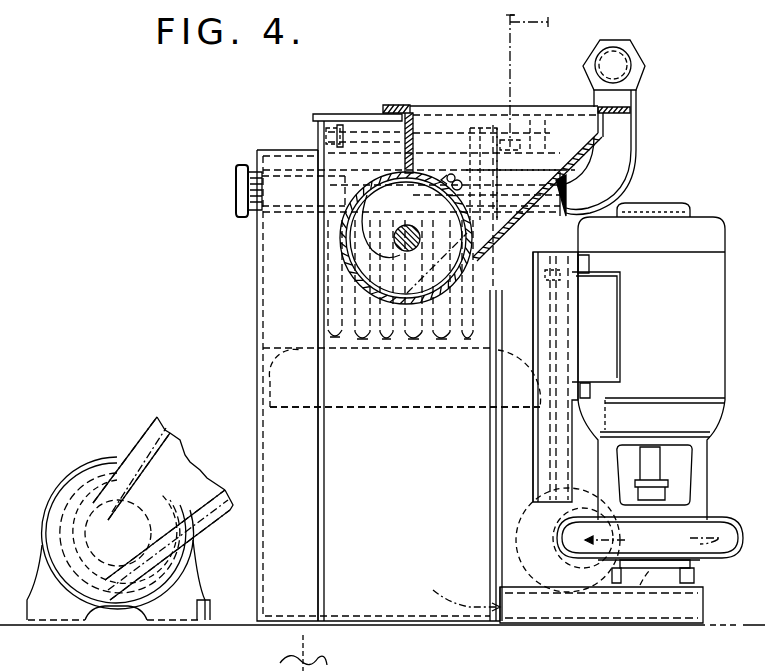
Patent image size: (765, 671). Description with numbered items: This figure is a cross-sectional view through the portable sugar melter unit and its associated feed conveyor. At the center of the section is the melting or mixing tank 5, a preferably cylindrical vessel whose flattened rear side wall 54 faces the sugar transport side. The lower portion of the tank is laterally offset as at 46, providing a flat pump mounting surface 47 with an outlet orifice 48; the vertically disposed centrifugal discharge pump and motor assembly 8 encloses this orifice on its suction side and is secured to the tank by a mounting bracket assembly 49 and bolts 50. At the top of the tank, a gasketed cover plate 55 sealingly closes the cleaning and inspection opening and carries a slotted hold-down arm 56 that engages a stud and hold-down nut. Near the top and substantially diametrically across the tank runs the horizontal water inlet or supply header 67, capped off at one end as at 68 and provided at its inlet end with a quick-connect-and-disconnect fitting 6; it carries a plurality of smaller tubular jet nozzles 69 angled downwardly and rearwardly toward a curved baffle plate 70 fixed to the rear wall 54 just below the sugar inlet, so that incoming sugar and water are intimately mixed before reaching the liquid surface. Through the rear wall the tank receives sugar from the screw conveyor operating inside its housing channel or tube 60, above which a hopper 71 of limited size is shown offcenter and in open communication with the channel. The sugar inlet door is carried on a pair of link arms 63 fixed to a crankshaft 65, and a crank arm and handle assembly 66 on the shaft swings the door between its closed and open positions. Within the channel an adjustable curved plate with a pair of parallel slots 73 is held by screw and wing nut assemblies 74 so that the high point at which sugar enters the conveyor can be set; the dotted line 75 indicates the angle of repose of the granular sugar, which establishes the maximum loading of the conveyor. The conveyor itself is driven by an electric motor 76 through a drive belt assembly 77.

The melting or mixing tank 5 is at (249, 302).
The quick-connect-and-disconnect fitting 6 is at (638, 68).
The centrifugal discharge pump and motor assembly 8 is at (651, 361).
The laterally offset lower portion 46 is at (555, 610).
The pump mounting surface 47 is at (603, 576).
The outlet orifice 48 is at (640, 590).
The mounting bracket assembly 49 is at (583, 310).
The bolts 50 is at (590, 262).
The flattened rear side wall 54 is at (328, 428).
The cover plate 55 is at (348, 113).
The slotted hold-down arm 56 is at (285, 658).
The conveyor housing channel or tube 60 is at (355, 280).
The link arms 63 is at (345, 190).
The crankshaft 65 is at (372, 135).
The crank arm and handle assembly 66 is at (512, 82).
The water inlet or supply header 67 is at (624, 186).
The capped terminating end 68 is at (235, 186).
The tubular jet nozzles 69 is at (336, 341).
The curved baffle plate 70 is at (412, 405).
The hopper 71 is at (415, 104).
The parallel slots 73 is at (445, 178).
The screw and wing nut assemblies 74 is at (455, 176).
The angle of repose 75 is at (425, 268).
The electric motor 76 is at (75, 472).
The drive belt assembly 77 is at (130, 455).